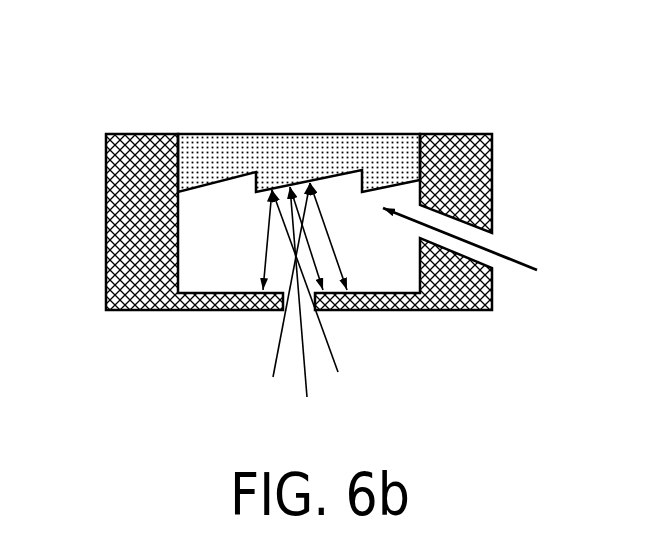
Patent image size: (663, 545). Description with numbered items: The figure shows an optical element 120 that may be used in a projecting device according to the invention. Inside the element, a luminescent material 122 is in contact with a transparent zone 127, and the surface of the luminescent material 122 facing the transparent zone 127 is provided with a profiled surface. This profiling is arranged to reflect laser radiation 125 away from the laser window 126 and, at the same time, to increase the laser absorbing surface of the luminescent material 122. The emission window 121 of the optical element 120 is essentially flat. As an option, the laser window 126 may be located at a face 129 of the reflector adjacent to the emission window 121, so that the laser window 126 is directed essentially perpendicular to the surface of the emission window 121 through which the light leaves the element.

The optical element 120 is at (122, 85).
The emission window 121 is at (293, 150).
The luminescent material 122 is at (383, 166).
The laser radiation 125 is at (338, 371).
The laser window 126 is at (480, 240).
The transparent zone 127 is at (193, 243).
The face of the reflector 129 is at (420, 257).